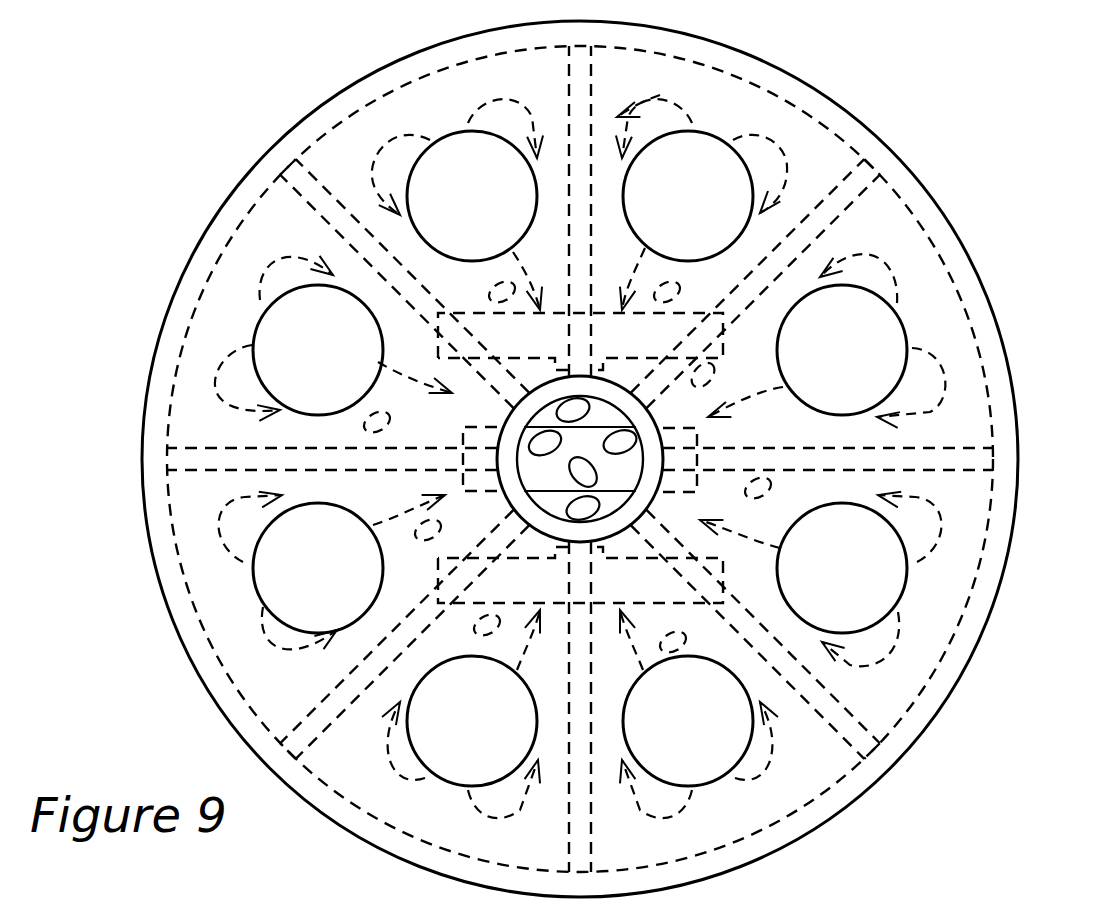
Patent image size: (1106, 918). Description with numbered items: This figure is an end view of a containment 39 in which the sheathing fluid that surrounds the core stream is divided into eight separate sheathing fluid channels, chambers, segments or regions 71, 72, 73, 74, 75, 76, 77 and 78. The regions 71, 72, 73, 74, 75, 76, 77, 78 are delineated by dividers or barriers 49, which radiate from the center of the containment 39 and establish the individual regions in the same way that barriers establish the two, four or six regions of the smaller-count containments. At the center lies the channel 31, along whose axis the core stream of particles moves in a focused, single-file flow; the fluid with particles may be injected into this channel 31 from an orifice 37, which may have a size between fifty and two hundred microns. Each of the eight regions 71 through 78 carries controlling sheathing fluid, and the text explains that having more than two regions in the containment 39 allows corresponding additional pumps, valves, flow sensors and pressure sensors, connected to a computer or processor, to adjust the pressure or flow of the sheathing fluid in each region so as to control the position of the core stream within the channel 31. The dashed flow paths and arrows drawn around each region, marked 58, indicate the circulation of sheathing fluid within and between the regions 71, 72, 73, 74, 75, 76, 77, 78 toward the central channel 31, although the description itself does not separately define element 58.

The channel 31 is at (697, 492).
The orifice 37 is at (661, 414).
The containment 39 is at (1018, 486).
The divider or barrier 49 is at (568, 64).
The flow paths 58 is at (523, 263).
The region 71 is at (750, 120).
The region 72 is at (947, 328).
The region 73 is at (949, 619).
The region 74 is at (754, 819).
The region 75 is at (455, 819).
The region 76 is at (250, 608).
The region 77 is at (250, 328).
The region 78 is at (452, 119).